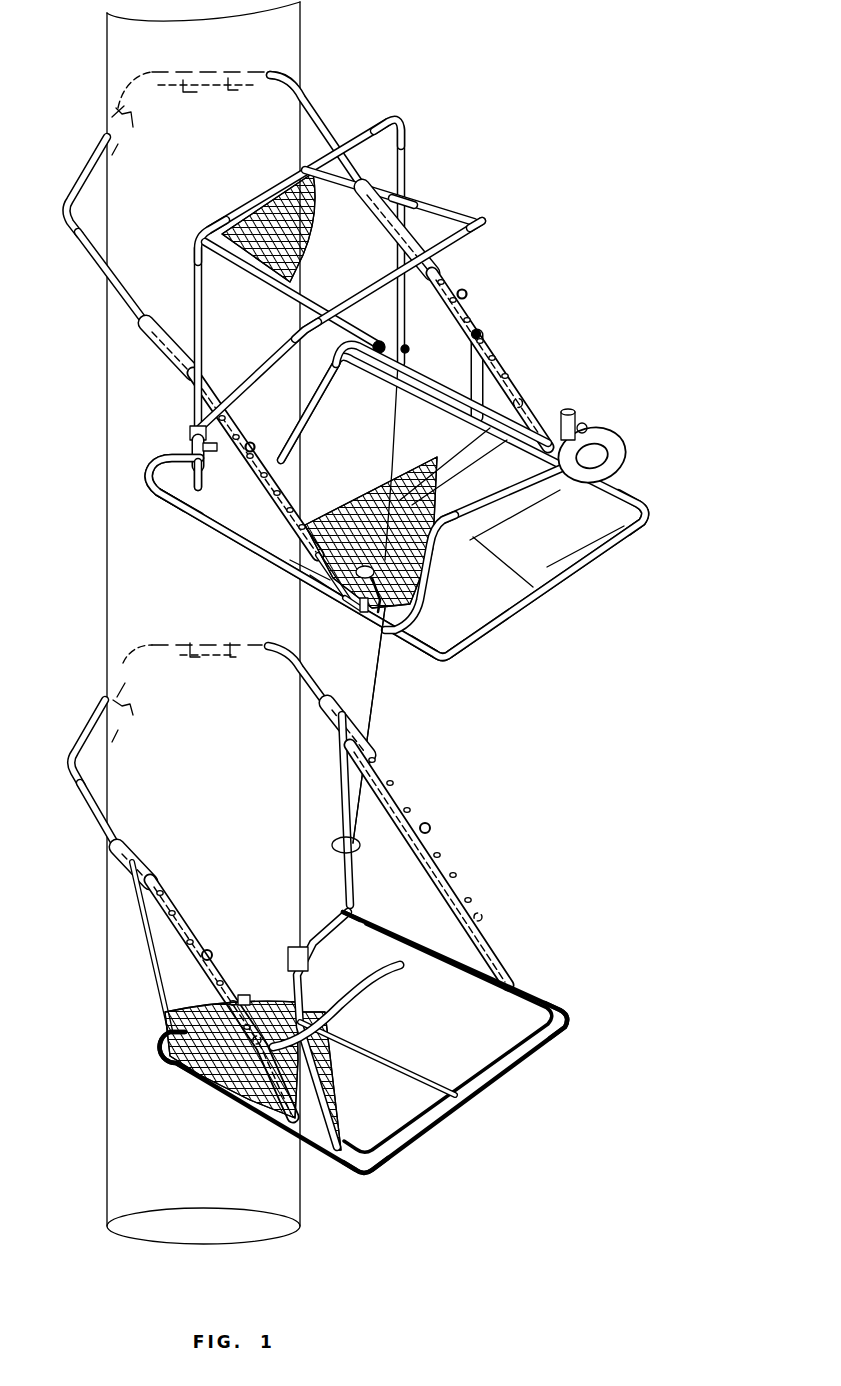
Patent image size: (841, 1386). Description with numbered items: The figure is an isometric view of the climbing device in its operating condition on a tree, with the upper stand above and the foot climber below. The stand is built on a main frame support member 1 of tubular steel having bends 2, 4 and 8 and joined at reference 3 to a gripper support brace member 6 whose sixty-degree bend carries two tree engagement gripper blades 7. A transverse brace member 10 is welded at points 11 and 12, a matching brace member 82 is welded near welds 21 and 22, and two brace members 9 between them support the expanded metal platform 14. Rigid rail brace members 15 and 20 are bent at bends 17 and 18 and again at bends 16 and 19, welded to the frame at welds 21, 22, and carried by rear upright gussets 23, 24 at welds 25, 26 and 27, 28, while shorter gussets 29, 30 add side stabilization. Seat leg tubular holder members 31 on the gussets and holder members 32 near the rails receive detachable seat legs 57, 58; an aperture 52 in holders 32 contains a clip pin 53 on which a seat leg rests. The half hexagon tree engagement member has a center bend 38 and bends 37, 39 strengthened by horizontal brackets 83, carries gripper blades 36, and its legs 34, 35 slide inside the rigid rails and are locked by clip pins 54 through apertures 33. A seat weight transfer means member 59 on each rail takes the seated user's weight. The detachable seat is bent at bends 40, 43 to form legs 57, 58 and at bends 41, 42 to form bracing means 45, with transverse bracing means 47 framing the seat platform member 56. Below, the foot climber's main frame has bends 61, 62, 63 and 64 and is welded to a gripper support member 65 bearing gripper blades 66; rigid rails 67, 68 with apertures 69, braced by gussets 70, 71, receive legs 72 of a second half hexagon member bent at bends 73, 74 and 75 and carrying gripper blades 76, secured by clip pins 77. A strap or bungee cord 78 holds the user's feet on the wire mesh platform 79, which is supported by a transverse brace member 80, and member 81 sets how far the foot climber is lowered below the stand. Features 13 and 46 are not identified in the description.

The main frame support member 1 is at (218, 523).
The bend 2 is at (442, 661).
The joint reference 3 is at (542, 606).
The bend 4 is at (657, 517).
The gripper support brace member 6 is at (314, 431).
The tree engagement gripper blades 7 is at (296, 406).
The bend 8 is at (151, 475).
The brace members 9 is at (442, 507).
The transverse brace member 10 is at (358, 519).
The weld location 11 is at (469, 428).
The weld location 12 is at (291, 561).
The mesh edge bar 13 is at (437, 482).
The platform member 14 is at (436, 619).
The rigid rail brace member 15 is at (311, 577).
The bend 16 is at (428, 666).
The bend 17 is at (449, 541).
The bend 18 is at (621, 428).
The bend 19 is at (630, 455).
The rigid rail brace member 20 is at (531, 391).
The weld location 21 is at (353, 620).
The weld location 22 is at (570, 486).
The rear upright brace 23 is at (202, 490).
The rear upright brace 24 is at (392, 322).
The weld location 25 is at (188, 418).
The weld location 26 is at (371, 226).
The weld location 27 is at (394, 372).
The weld location 28 is at (189, 507).
The shorter upright brace 29 is at (268, 527).
The shorter upright brace 30 is at (470, 392).
The seat leg tubular holder members 31 is at (411, 339).
The seat leg tubular holder members 32 is at (568, 409).
The apertures 33 is at (496, 343).
The tree engagement member leg 34 is at (84, 269).
The tree engagement member leg 35 is at (321, 111).
The tree engagement gripper blades 36 is at (124, 135).
The bend 37 is at (283, 70).
The center bend 38 is at (139, 70).
The bend 39 is at (62, 210).
The bend 40 is at (194, 236).
The bend 41 is at (317, 336).
The bend 42 is at (487, 221).
The bend 43 is at (404, 116).
The bracing means 45 is at (244, 381).
The top bar 46 is at (331, 176).
The transverse bracing means 47 is at (425, 186).
The aperture 52 is at (372, 614).
The clip pin member 53 is at (589, 421).
The clip pin 54 is at (470, 296).
The seat platform member 56 is at (269, 213).
The seat leg member 57 is at (408, 212).
The seat leg member 58 is at (191, 300).
The seat weight transfer means member 59 is at (238, 427).
The bend 61 is at (366, 1177).
The bend 62 is at (573, 1020).
The bend 63 is at (362, 921).
The bend 64 is at (162, 1055).
The tree engagement gripper support member 65 is at (321, 962).
The gripper blade members 66 is at (245, 992).
The rigid rail 67 is at (328, 1089).
The rigid rail 68 is at (509, 935).
The apertures 69 is at (407, 790).
The upright brace 70 is at (339, 797).
The upright brace 71 is at (141, 941).
The tree engagement legs 72 is at (316, 702).
The bend 73 is at (284, 668).
The bend 74 is at (143, 640).
The bend 75 is at (67, 766).
The gripper blades 76 is at (205, 689).
The clip pin 77 is at (431, 826).
The rubber strap or bungee tie down cord 78 is at (383, 990).
The wire mesh platform 79 is at (233, 1083).
The transverse brace member 80 is at (393, 1050).
The member 81 is at (383, 722).
The brace member 82 is at (516, 513).
The horizontal brackets 83 is at (279, 98).